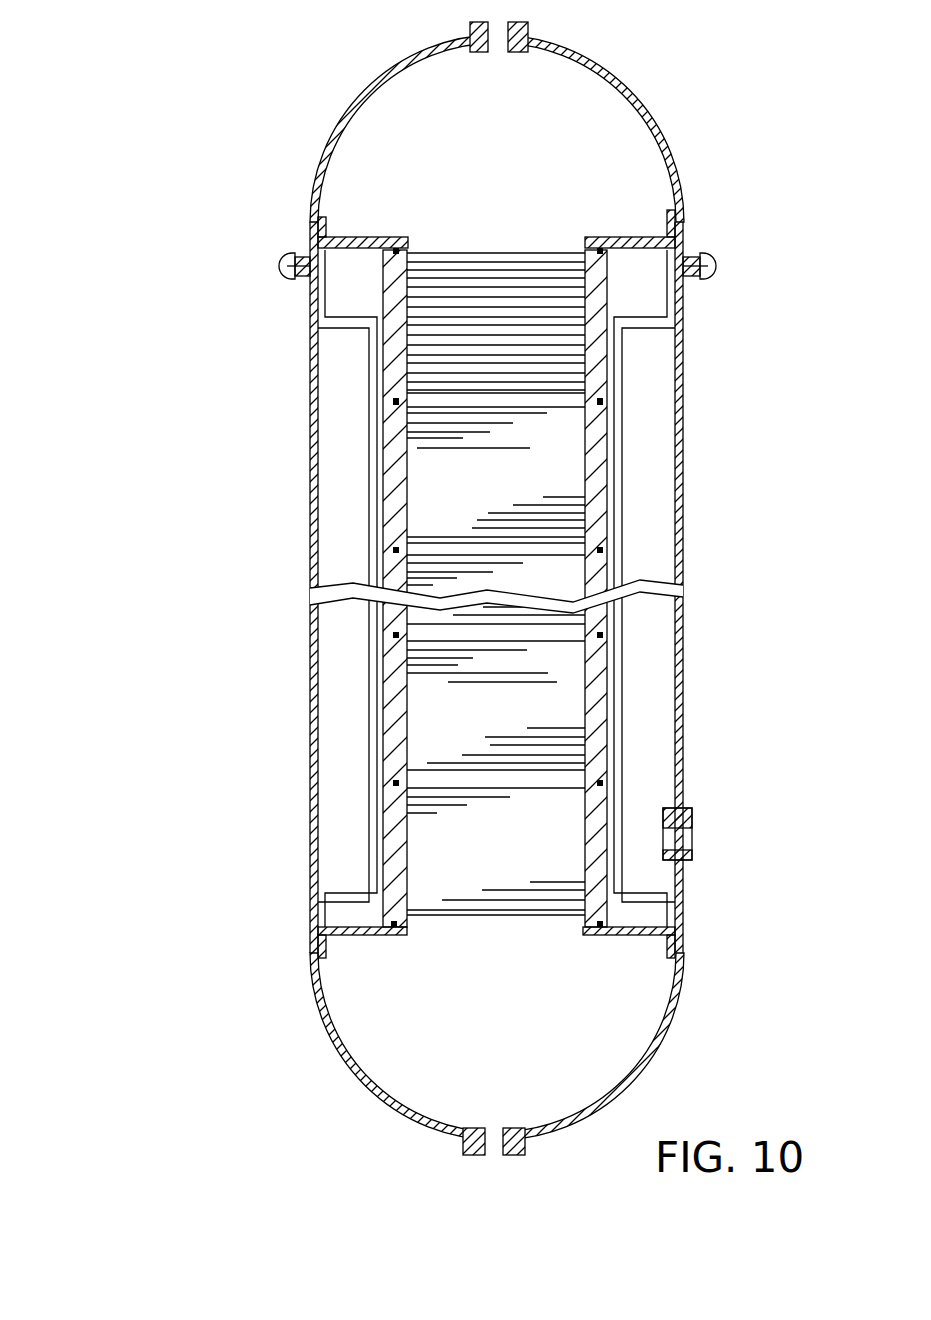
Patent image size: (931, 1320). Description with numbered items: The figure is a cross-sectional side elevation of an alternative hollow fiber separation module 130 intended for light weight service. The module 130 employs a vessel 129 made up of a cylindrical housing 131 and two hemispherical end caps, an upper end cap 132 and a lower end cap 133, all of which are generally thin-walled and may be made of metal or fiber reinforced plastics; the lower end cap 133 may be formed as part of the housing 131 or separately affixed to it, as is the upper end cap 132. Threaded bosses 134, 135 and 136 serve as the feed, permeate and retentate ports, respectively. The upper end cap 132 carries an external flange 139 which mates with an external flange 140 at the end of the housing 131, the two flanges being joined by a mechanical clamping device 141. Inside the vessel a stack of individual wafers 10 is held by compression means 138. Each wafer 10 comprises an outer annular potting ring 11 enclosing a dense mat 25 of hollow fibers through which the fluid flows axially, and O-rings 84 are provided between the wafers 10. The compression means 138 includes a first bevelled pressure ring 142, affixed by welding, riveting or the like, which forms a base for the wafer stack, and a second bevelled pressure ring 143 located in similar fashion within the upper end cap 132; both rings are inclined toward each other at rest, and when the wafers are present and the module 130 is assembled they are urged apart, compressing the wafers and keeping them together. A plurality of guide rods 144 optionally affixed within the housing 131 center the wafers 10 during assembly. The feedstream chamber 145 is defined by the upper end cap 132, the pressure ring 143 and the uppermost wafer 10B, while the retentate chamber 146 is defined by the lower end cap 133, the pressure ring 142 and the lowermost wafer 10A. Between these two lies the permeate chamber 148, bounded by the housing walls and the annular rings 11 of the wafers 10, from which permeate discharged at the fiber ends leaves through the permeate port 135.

The wafer 10 is at (373, 722).
The outer annular potting ring 11 is at (597, 670).
The lowermost wafer 10A is at (615, 908).
The uppermost wafer 10B is at (617, 298).
The dense mat 25 is at (551, 422).
The O-rings 84 is at (596, 248).
The vessel 129 is at (494, 587).
The hollow fiber separation module 130 is at (509, 591).
The cylindrical housing 131 is at (683, 683).
The upper end cap 132 is at (660, 118).
The lower end cap 133 is at (640, 1072).
The threaded boss 134 is at (520, 30).
The threaded boss 135 is at (692, 820).
The threaded boss 136 is at (513, 1157).
The compression means 138 is at (394, 193).
The external flange 139 is at (542, 234).
The external flange 140 is at (690, 278).
The mechanical clamping device 141 is at (716, 262).
The first bevelled pressure ring 142 is at (613, 935).
The second bevelled pressure ring 143 is at (615, 237).
The guide rods 144 is at (618, 482).
The feedstream chamber 145 is at (575, 82).
The retentate chamber 146 is at (640, 993).
The permeate chamber 148 is at (650, 737).